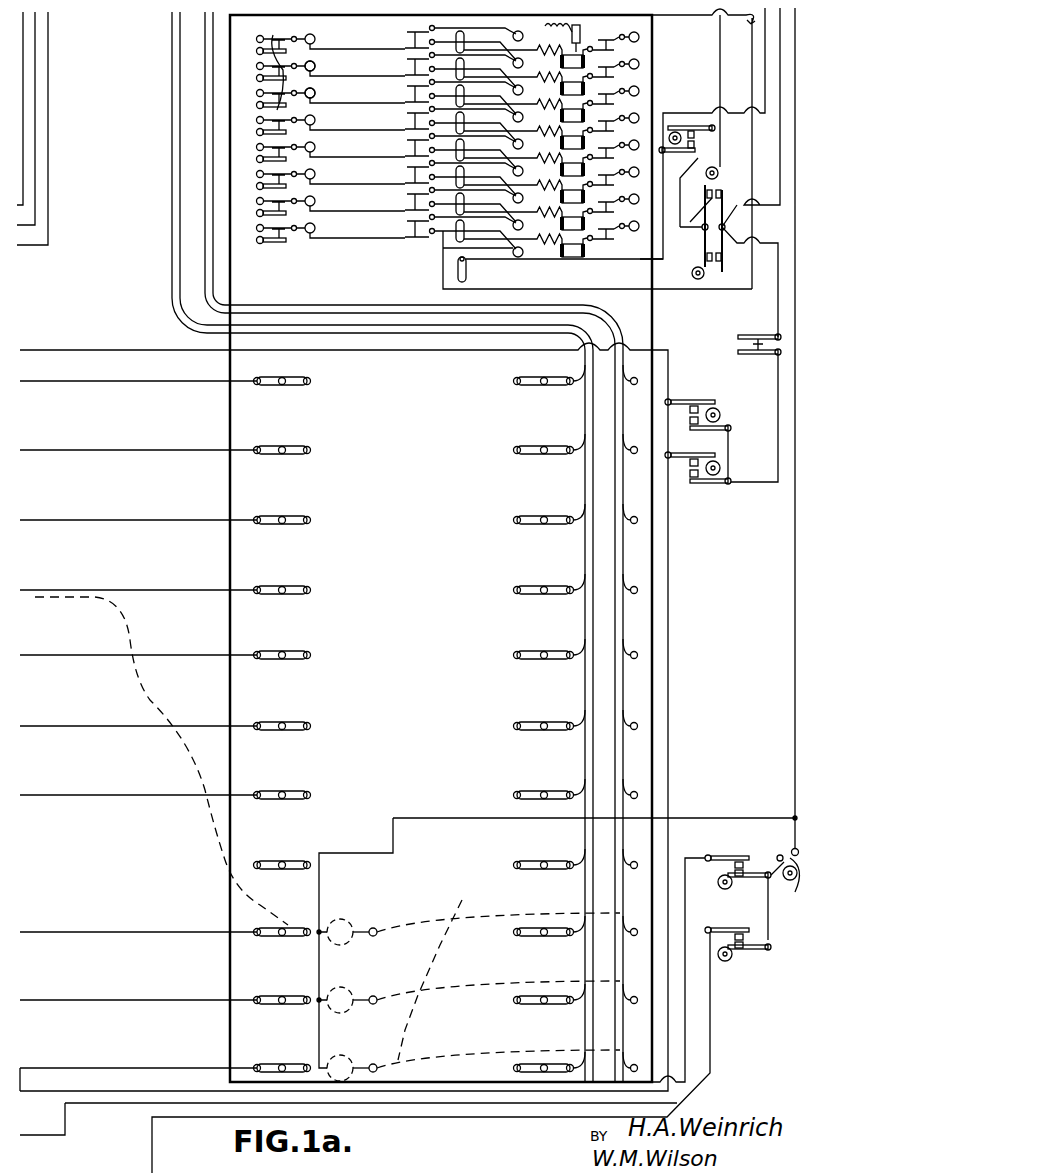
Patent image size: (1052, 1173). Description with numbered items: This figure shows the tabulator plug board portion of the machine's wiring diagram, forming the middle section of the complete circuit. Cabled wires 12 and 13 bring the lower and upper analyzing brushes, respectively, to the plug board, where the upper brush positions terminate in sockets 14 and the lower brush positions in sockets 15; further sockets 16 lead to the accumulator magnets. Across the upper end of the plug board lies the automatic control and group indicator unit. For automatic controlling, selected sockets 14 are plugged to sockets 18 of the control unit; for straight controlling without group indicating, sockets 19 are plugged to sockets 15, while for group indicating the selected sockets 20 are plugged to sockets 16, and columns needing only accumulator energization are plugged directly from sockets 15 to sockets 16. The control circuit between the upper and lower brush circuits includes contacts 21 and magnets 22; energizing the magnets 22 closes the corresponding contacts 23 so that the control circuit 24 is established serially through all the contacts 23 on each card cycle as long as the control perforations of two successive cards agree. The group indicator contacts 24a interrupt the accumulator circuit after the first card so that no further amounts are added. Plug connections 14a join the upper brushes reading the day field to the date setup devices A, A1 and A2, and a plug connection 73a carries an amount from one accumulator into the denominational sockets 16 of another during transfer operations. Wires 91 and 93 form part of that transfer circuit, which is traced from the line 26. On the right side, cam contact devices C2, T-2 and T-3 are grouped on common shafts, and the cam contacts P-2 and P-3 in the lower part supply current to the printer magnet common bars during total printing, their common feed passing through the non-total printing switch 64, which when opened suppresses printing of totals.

The cabled wires 12 is at (172, 178).
The cabled wires 13 is at (205, 228).
The plug sockets 14 is at (636, 790).
The plug connections 14a is at (476, 915).
The plug sockets 15 is at (514, 792).
The plug sockets 16 is at (314, 862).
The sockets of the automatic control unit 18 is at (639, 92).
The plug sockets 19 is at (311, 92).
The sockets 20 is at (258, 66).
The contacts 21 is at (698, 55).
The magnets 22 is at (583, 70).
The contacts 23 is at (403, 35).
The control circuit 24 is at (750, 22).
The group indicator contacts 24a is at (296, 60).
The line 26 is at (24, 160).
The non-total printing switch 64 is at (790, 886).
The plug connection 73a is at (118, 628).
The wire 91 is at (35, 77).
The wire 93 is at (48, 113).
The date setup device A is at (352, 932).
The date setup device A1 is at (352, 1000).
The date setup device A2 is at (352, 1068).
The cam contact device C2 is at (682, 125).
The cam contact device T-2 is at (716, 183).
The cam contact device T-3 is at (712, 265).
The cam contact device P-2 is at (730, 860).
The cam contact device P-3 is at (740, 942).